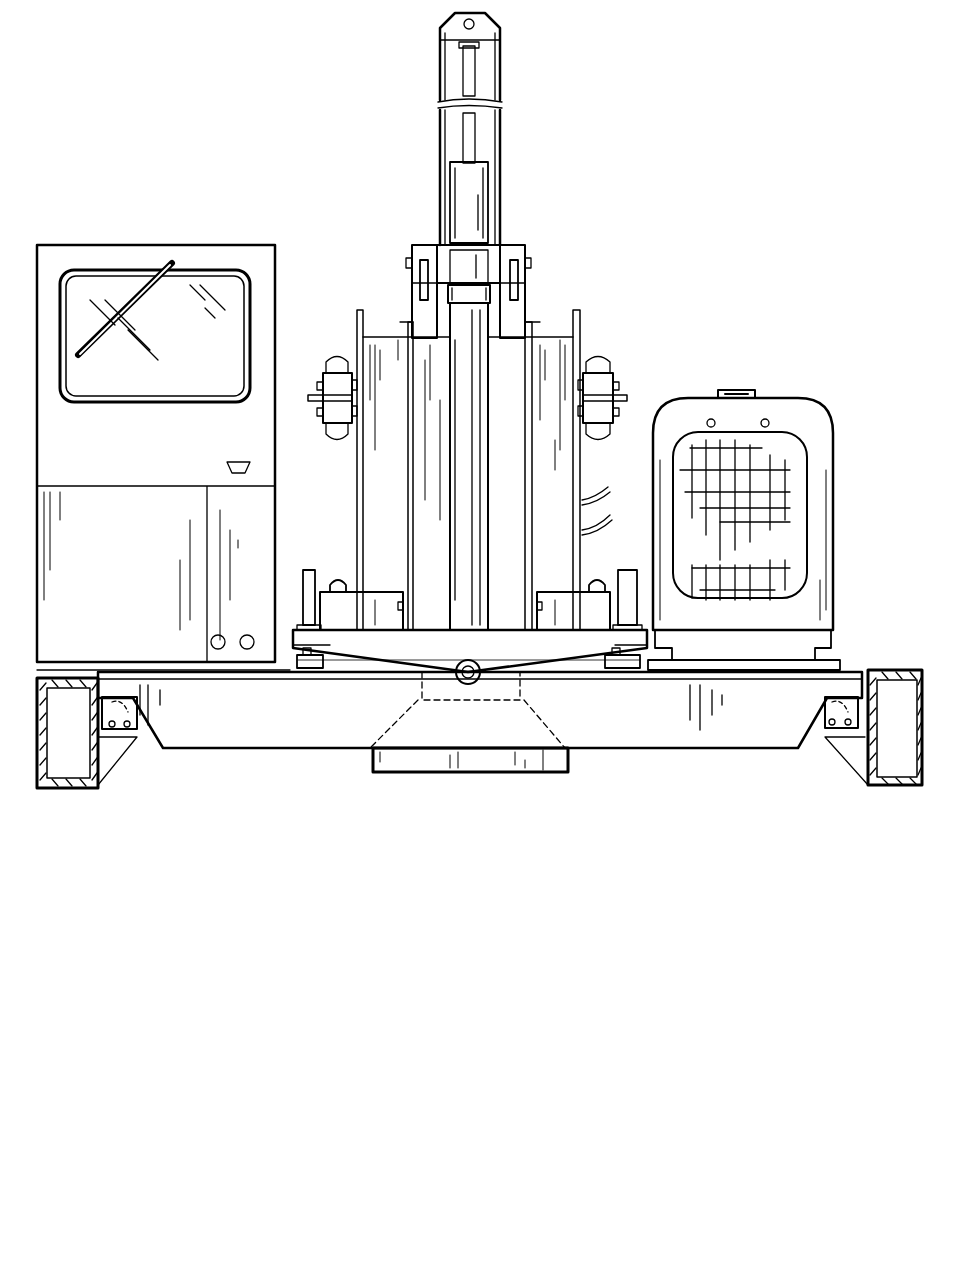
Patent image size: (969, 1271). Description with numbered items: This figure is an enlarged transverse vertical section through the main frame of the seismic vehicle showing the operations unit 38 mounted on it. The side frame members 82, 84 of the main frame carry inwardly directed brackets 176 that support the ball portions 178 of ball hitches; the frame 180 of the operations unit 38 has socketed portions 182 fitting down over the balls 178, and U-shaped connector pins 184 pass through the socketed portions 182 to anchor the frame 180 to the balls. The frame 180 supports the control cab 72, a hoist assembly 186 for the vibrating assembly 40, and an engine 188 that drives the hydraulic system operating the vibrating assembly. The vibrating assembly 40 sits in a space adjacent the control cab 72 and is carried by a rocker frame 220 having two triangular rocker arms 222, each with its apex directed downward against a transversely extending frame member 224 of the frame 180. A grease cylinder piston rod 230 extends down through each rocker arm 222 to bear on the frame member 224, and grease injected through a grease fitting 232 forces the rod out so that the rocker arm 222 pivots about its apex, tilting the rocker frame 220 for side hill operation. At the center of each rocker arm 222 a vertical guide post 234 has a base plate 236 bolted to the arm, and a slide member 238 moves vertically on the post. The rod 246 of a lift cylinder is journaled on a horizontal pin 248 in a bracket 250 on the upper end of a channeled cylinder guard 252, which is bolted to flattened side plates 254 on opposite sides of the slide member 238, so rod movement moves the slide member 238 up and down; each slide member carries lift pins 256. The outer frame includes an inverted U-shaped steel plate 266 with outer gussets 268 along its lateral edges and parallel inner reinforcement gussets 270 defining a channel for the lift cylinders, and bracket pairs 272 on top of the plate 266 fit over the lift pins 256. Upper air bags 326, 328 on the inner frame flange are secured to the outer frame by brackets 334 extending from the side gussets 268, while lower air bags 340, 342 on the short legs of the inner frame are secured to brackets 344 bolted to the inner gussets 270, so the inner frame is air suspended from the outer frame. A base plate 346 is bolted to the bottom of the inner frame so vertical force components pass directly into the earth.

The operations unit 38 is at (180, 165).
The vibrating assembly 40 is at (636, 280).
The control cab 72 is at (257, 250).
The side frame member 82 is at (70, 790).
The side frame member 84 is at (885, 790).
The bracket 176 is at (108, 768).
The ball portion 178 is at (95, 662).
The frame 180 is at (240, 740).
The socketed portion 182 is at (118, 700).
The U-shaped connector pin 184 is at (118, 740).
The hoist assembly 186 is at (535, 194).
The engine 188 is at (772, 408).
The rocker frame 220 is at (592, 668).
The rocker arm 222 is at (355, 645).
The transversely extending frame member 224 is at (300, 745).
The piston rod 230 is at (300, 665).
The grease fitting 232 is at (305, 580).
The vertical guide post 234 is at (470, 557).
The base plate 236 is at (483, 688).
The slide member 238 is at (462, 233).
The rod 246 is at (476, 78).
The horizontal pin 248 is at (452, 27).
The bracket 250 is at (483, 28).
The channeled cylinder guard 252 is at (503, 143).
The flattened side plate 254 is at (433, 262).
The lift pin 256 is at (410, 262).
The inverted U-shaped steel plate 266 is at (560, 470).
The outer gusset 268 is at (360, 325).
The inner reinforcement gusset 270 is at (410, 325).
The bracket pair 272 is at (420, 290).
The air bag 326 is at (593, 372).
The air bag 328 is at (337, 368).
The bracket 334 is at (312, 400).
The air bag 340 is at (560, 597).
The air bag 342 is at (340, 578).
The bracket 344 is at (385, 632).
The base plate 346 is at (520, 773).